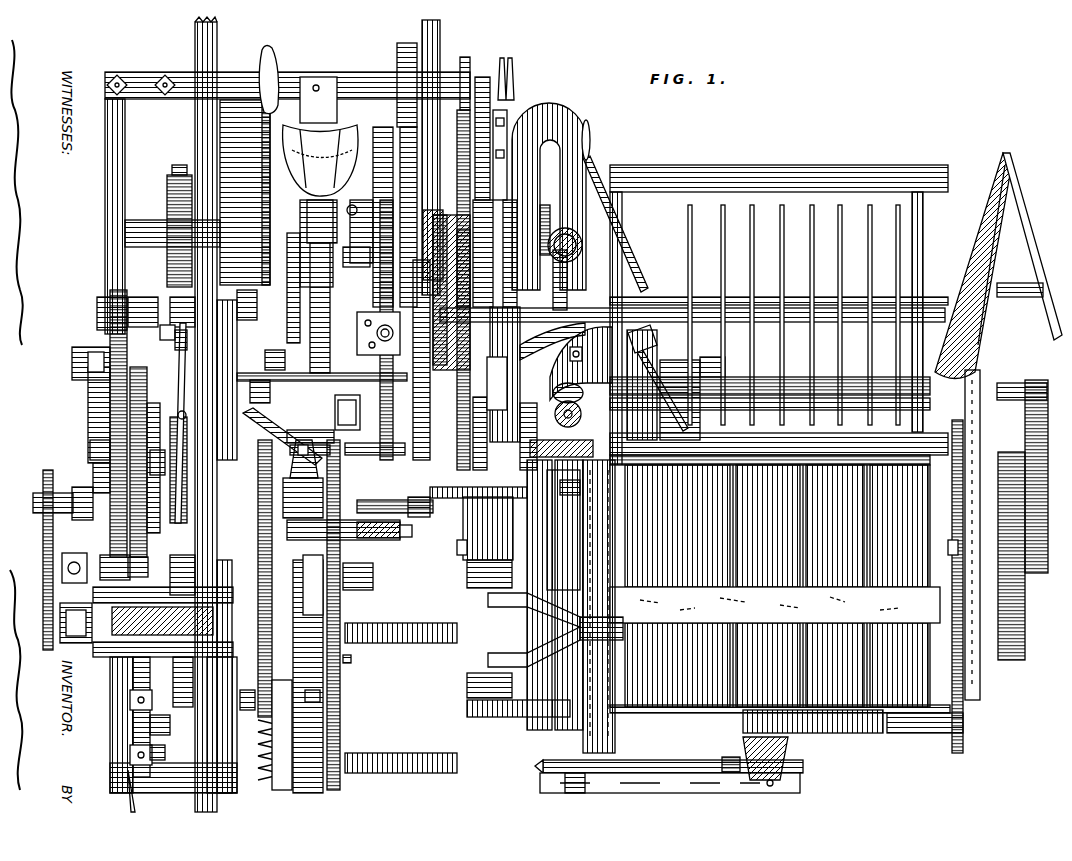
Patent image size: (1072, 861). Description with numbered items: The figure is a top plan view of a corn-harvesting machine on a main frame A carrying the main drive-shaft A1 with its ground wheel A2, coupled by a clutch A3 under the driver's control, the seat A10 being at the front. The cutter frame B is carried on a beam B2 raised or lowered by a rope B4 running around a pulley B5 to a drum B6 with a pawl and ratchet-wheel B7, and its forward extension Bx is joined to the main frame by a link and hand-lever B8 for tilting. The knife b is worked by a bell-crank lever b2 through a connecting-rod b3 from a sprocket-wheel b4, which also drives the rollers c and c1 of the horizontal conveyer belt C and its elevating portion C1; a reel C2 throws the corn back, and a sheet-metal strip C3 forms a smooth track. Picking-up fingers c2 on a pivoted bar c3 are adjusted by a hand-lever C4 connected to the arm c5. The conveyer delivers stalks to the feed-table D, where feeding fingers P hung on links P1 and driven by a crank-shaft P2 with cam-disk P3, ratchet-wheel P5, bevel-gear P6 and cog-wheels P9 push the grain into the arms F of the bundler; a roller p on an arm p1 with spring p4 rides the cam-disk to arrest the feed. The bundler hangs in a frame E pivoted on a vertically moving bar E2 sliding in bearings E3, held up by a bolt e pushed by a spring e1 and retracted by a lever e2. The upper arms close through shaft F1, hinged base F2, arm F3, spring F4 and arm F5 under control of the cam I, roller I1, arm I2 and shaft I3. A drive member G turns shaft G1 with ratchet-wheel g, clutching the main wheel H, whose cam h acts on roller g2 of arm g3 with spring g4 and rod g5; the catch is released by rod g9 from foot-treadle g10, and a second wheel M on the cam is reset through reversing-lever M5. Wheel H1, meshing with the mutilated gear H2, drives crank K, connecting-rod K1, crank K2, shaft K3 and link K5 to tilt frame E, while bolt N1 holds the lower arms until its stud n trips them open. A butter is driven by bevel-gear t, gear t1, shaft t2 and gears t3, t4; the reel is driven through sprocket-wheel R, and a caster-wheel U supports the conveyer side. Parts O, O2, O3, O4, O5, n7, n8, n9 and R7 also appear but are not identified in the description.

The main frame A is at (106, 161).
The main drive-shaft A1 is at (145, 222).
The drive or ground wheel A2 is at (245, 192).
The clutch or ratchet device A3 is at (300, 205).
The seat A10 is at (320, 160).
The cutter frame B is at (1000, 380).
The beam B2 is at (518, 192).
The rope B4 is at (471, 74).
The pulley B5 is at (487, 126).
The drum B6 is at (440, 52).
The pawl and ratchet-wheel B7 is at (407, 73).
The link and hand-lever B8 is at (540, 108).
The forward extension Bx is at (548, 176).
The conveyer belt C is at (770, 586).
The elevating portion of the conveyer C1 is at (616, 598).
The reel C2 is at (779, 307).
The strip of sheet metal C3 is at (775, 605).
The hand-lever C4 is at (590, 140).
The roller c is at (728, 760).
The top roller c1 is at (552, 775).
The picking-up fingers c2 is at (794, 315).
The pivoted bar c3 is at (730, 445).
The arm c5 is at (650, 350).
The feed-table D is at (515, 720).
The frame E is at (325, 708).
The vertically-moving bar or frame E2 is at (347, 616).
The bearings E3 is at (208, 684).
The bolt or lock e is at (180, 590).
The spring e1 is at (170, 648).
The pivoted lever e2 is at (73, 559).
The bundling-arms F is at (386, 658).
The shaft F1 is at (308, 479).
The secondary shaft or base F2 is at (340, 738).
The arm F3 is at (343, 530).
The spring F4 is at (368, 573).
The arm F5 is at (405, 540).
The gear G is at (178, 175).
The shaft G1 is at (192, 472).
The ratchet-wheel g is at (93, 472).
The roller g2 is at (112, 450).
The arm or lever g3 is at (157, 455).
The spring g4 is at (194, 355).
The rod g5 is at (194, 423).
The rod g9 is at (262, 186).
The foot-treadle g10 is at (276, 58).
The main operating-wheel H is at (138, 454).
The second wheel H1 is at (183, 682).
The mutilated gear H2 is at (128, 560).
The cam h is at (152, 410).
The outside cam I is at (110, 430).
The roller I1 is at (156, 335).
The arm I2 is at (92, 350).
The shaft I3 is at (149, 318).
The crank K is at (39, 500).
The connecting-rod K1 is at (59, 598).
The crank K2 is at (72, 505).
The shaft K3 is at (43, 485).
The link K5 is at (240, 700).
The wheel M is at (110, 566).
The reversing-lever M5 is at (166, 725).
The spring-pressed bolt N1 is at (258, 770).
The stud or wheel n is at (258, 712).
The pin n7 is at (343, 660).
The block n8 is at (285, 376).
The pin n9 is at (319, 455).
The bar O is at (345, 225).
The block O2 is at (355, 256).
The toothed bar O3 is at (283, 320).
The block O4 is at (284, 354).
The lever O5 is at (282, 435).
The feeding blades or fingers P is at (467, 682).
The links P1 is at (488, 597).
The crank-shaft P2 is at (488, 528).
The cam-disk P3 is at (468, 491).
The ratchet-wheel P5 is at (450, 546).
The bevel-gear P6 is at (404, 501).
The cog-wheels P9 is at (472, 476).
The anti-friction roller p is at (563, 530).
The arm p1 is at (585, 508).
The spring p4 is at (423, 245).
The sprocket-wheel R is at (456, 292).
The bevel gear R7 is at (457, 292).
The bevel-gear t is at (581, 416).
The gear t1 is at (583, 392).
The shaft t2 is at (567, 280).
The gear t3 is at (580, 245).
The gear t4 is at (543, 230).
The caster-wheel U is at (1026, 602).
The knife or blade b is at (770, 385).
The bell-crank lever b2 is at (790, 755).
The connecting-rod b3 is at (680, 790).
The sprocket-wheel b4 is at (592, 790).